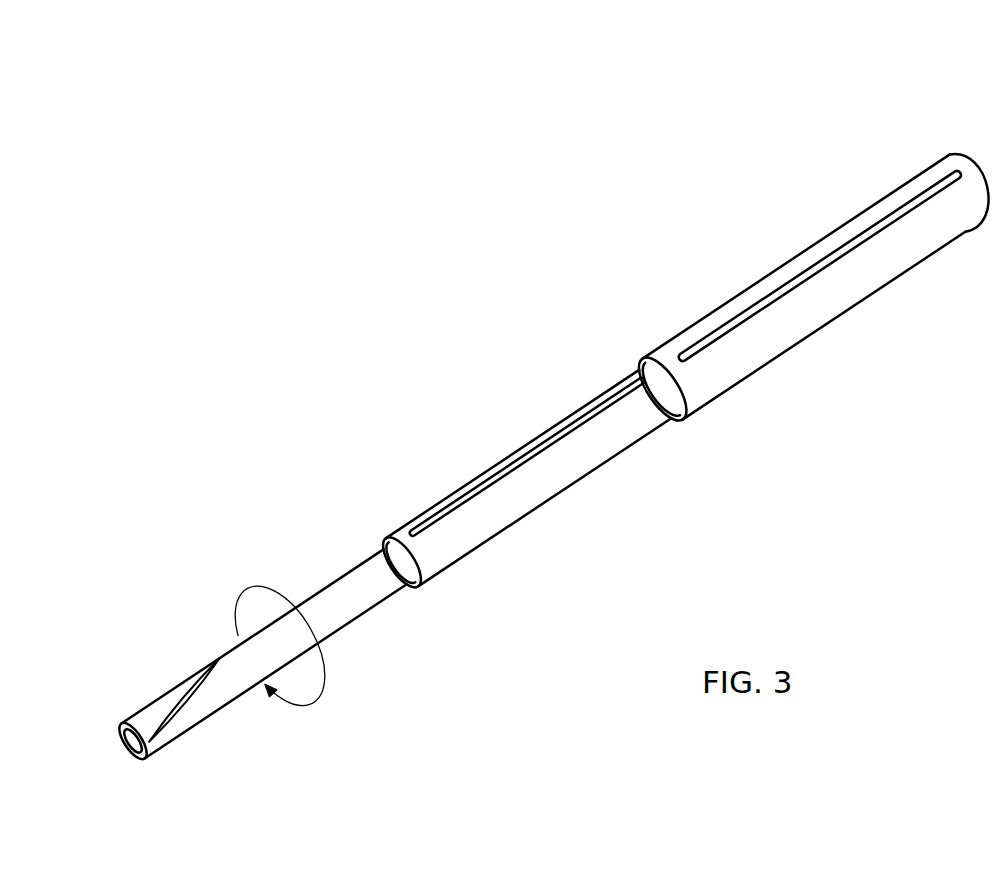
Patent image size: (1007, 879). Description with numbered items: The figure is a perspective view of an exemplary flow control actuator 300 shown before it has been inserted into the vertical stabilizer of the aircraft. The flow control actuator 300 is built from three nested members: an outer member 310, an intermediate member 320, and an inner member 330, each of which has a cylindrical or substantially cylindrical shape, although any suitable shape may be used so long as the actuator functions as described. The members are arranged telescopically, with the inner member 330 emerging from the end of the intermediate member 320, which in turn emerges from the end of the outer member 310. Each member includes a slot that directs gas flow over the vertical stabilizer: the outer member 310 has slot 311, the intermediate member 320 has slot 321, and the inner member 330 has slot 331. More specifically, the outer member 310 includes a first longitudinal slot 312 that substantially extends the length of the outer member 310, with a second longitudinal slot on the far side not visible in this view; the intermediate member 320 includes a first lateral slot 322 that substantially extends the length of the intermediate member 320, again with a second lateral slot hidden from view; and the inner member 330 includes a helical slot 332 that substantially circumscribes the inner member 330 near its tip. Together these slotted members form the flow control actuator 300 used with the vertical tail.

The flow control actuator 300 is at (253, 321).
The outer member 310 is at (938, 149).
The slot 311 is at (867, 256).
The first longitudinal slot 312 is at (876, 224).
The intermediate member 320 is at (587, 381).
The slot 321 is at (581, 444).
The first lateral slot 322 is at (513, 463).
The inner member 330 is at (323, 568).
The slot 331 is at (204, 712).
The helical slot 332 is at (190, 684).